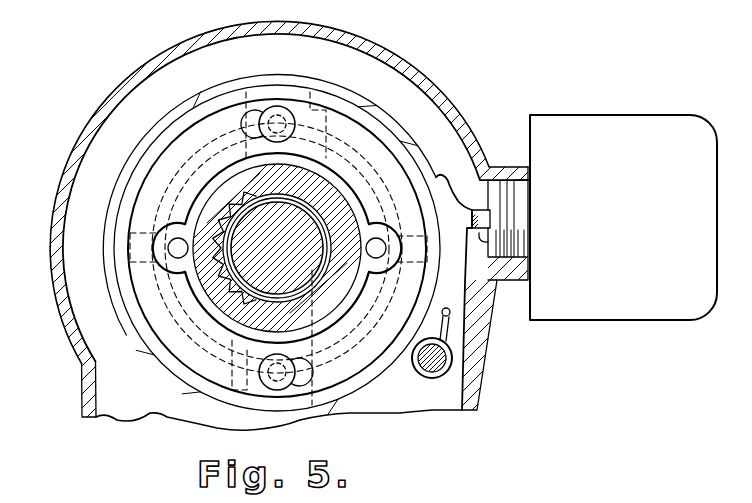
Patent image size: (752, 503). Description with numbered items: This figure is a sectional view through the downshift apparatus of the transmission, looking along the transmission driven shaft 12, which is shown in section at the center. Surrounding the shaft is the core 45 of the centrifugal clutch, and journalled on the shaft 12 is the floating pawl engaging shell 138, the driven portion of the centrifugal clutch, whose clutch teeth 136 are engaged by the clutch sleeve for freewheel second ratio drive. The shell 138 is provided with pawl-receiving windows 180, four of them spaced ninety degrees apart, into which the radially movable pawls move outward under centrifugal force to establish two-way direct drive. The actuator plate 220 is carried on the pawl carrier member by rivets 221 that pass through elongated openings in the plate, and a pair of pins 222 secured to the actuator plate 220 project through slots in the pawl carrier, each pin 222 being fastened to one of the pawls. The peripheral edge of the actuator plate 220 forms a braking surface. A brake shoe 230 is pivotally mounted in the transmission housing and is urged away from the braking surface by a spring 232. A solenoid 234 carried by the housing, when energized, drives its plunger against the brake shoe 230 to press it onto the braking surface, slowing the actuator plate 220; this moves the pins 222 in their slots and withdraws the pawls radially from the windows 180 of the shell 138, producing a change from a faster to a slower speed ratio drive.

The transmission driven shaft 12 is at (287, 239).
The core portion of centrifugal clutch 45 is at (237, 303).
The clutch teeth 136 is at (483, 229).
The floating pawl engaging shell 138 is at (327, 78).
The pawl-receiving windows 180 is at (148, 145).
The actuator plate 220 is at (180, 122).
The rivets 221 is at (277, 112).
The pins 222 is at (168, 252).
The brake shoe 230 is at (455, 311).
The spring 232 is at (453, 369).
The solenoid 234 is at (641, 173).